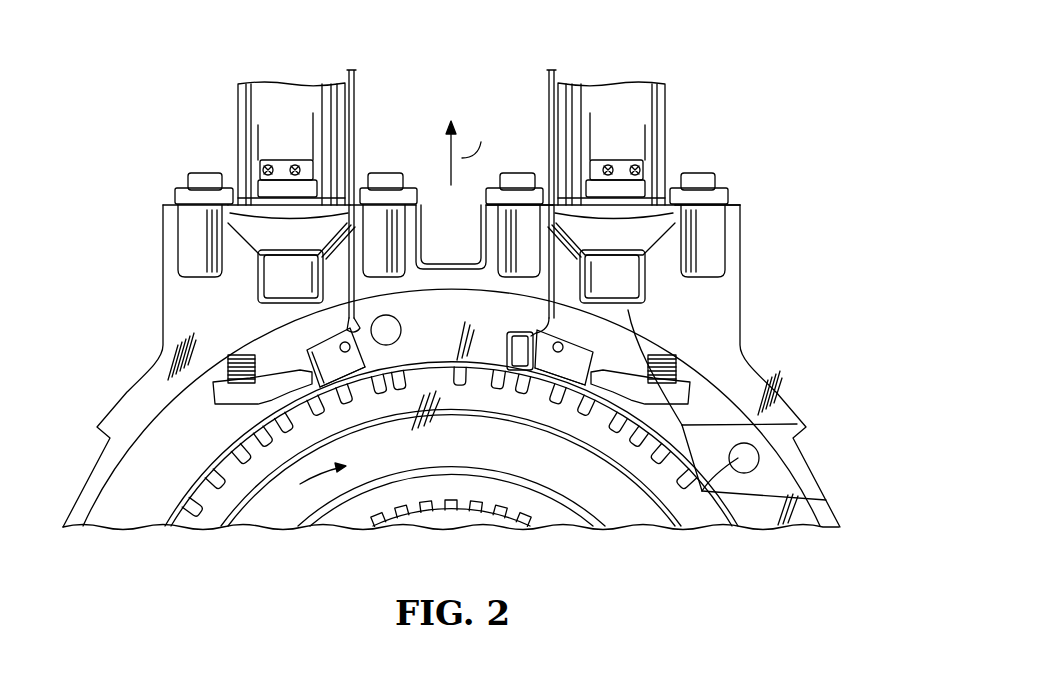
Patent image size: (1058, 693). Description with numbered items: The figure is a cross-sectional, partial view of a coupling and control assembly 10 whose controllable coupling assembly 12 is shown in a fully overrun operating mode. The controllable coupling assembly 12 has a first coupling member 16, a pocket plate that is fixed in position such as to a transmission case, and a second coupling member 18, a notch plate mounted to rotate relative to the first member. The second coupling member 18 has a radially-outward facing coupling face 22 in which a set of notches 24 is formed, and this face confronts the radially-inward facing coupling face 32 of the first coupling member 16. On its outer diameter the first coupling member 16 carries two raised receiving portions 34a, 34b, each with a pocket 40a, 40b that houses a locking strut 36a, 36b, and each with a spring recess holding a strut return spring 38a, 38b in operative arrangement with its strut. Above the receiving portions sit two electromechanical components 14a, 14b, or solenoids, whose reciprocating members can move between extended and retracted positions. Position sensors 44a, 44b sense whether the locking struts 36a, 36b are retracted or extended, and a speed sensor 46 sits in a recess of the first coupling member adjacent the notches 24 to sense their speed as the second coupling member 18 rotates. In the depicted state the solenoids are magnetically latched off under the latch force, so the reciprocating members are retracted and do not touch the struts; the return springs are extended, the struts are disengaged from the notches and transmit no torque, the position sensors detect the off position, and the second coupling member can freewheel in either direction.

The coupling and control assembly 10 is at (707, 51).
The controllable coupling assembly 12 is at (812, 337).
The first electromechanical component 14a is at (238, 126).
The second electromechanical component 14b is at (664, 131).
The first coupling member 16 is at (83, 489).
The second coupling member 18 is at (262, 528).
The coupling face 22 is at (702, 492).
The notches 24 is at (805, 431).
The coupling face 32 is at (723, 498).
The first receiving portion 34a is at (163, 226).
The second receiving portion 34b is at (742, 232).
The first locking strut 36a is at (220, 402).
The second locking strut 36b is at (684, 397).
The first strut return spring 38a is at (230, 362).
The second strut return spring 38b is at (677, 367).
The first pocket 40a is at (257, 363).
The second pocket 40b is at (622, 372).
The first position sensor 44a is at (340, 376).
The second position sensor 44b is at (563, 376).
The speed sensor 46 is at (508, 348).